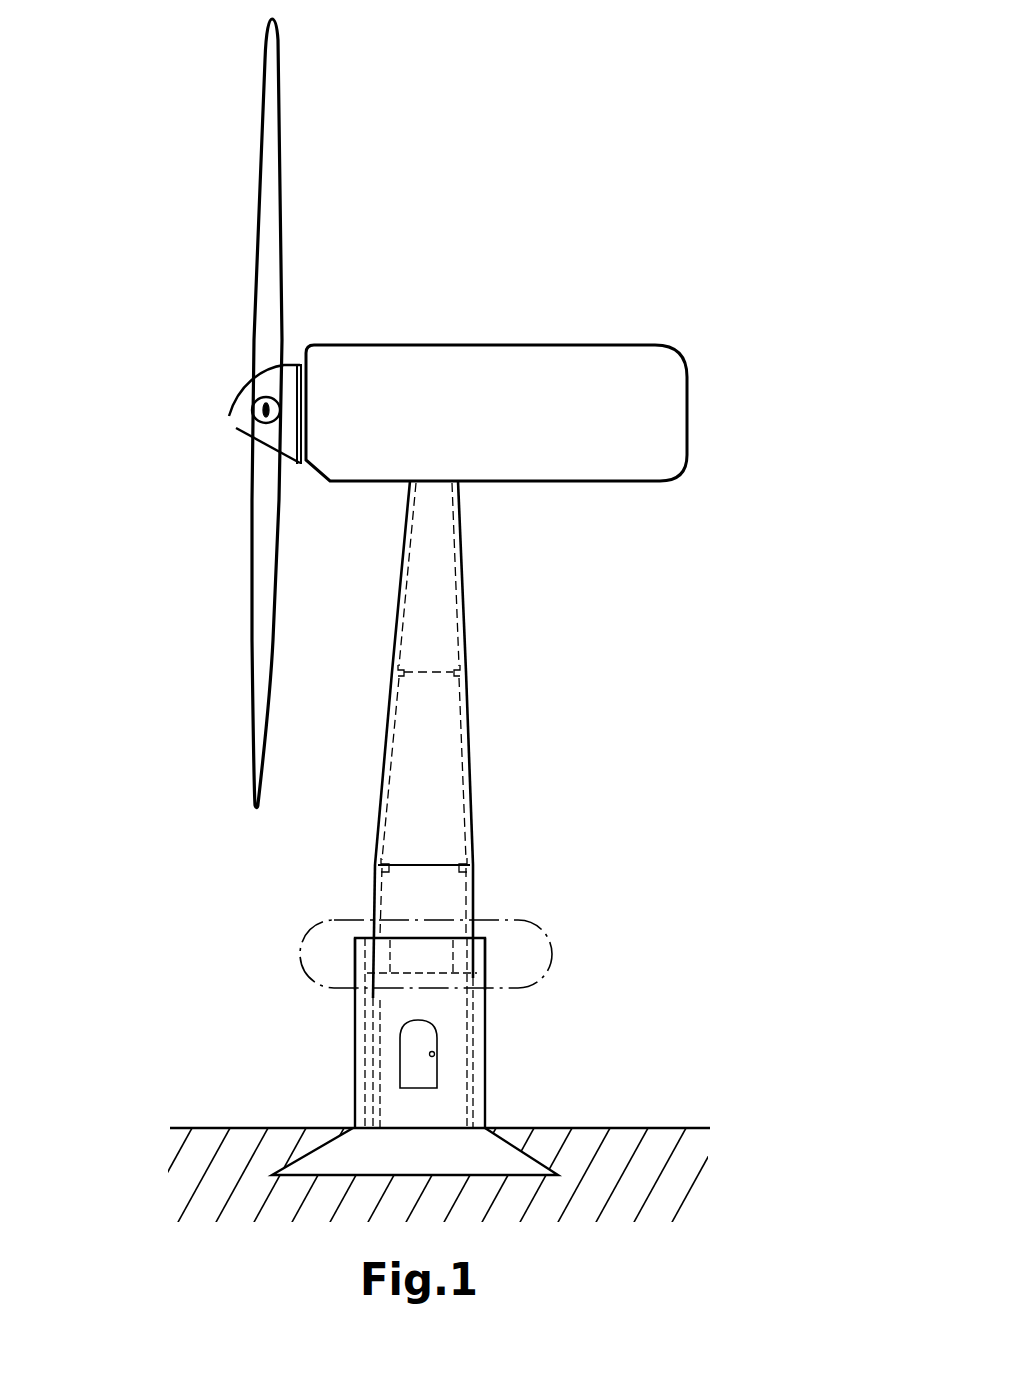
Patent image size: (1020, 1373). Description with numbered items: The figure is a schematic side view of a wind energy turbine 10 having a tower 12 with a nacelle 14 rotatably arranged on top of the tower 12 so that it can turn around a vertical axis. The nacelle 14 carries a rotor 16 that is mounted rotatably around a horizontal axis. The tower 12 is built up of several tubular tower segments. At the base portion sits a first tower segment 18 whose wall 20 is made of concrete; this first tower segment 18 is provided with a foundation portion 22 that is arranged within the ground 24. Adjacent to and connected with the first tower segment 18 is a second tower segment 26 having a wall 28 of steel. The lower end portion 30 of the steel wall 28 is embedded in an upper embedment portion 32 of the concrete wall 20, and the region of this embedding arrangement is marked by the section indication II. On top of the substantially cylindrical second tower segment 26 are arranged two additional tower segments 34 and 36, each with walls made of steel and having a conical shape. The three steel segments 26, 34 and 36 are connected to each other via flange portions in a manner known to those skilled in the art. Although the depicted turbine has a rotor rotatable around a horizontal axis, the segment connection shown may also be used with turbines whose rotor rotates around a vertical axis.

The wind energy turbine 10 is at (505, 188).
The tower 12 is at (560, 691).
The nacelle 14 is at (540, 375).
The rotor 16 is at (184, 367).
The first tower segment 18 is at (318, 1027).
The wall 20 is at (476, 1035).
The foundation portion 22 is at (485, 1158).
The ground 24 is at (626, 1177).
The second tower segment 26 is at (350, 903).
The wall 28 is at (473, 906).
The lower end portion 30 is at (492, 940).
The upper embedment portion 32 is at (348, 940).
The tower segment 34 is at (373, 762).
The tower segment 36 is at (372, 568).
The section line II is at (522, 921).